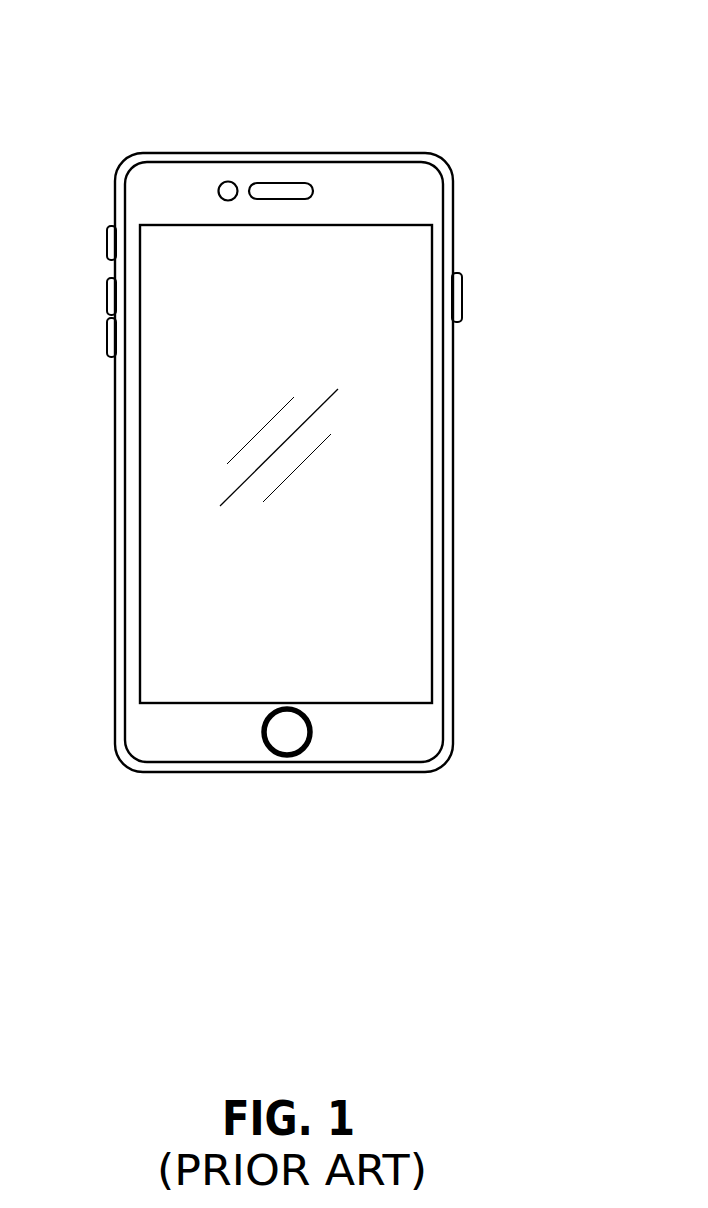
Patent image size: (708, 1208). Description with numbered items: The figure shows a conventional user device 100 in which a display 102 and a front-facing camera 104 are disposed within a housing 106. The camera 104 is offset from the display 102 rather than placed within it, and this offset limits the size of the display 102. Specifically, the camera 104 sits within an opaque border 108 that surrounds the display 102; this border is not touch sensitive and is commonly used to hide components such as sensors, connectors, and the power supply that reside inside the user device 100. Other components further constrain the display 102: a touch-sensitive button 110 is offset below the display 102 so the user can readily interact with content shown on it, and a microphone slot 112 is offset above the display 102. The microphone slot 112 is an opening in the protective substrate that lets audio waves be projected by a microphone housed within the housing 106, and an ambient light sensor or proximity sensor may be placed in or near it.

The user device 100 is at (59, 33).
The display 102 is at (412, 285).
The front-facing camera 104 is at (218, 183).
The housing 106 is at (454, 465).
The opaque border 108 is at (412, 183).
The touch-sensitive button 110 is at (307, 747).
The microphone slot 112 is at (283, 178).